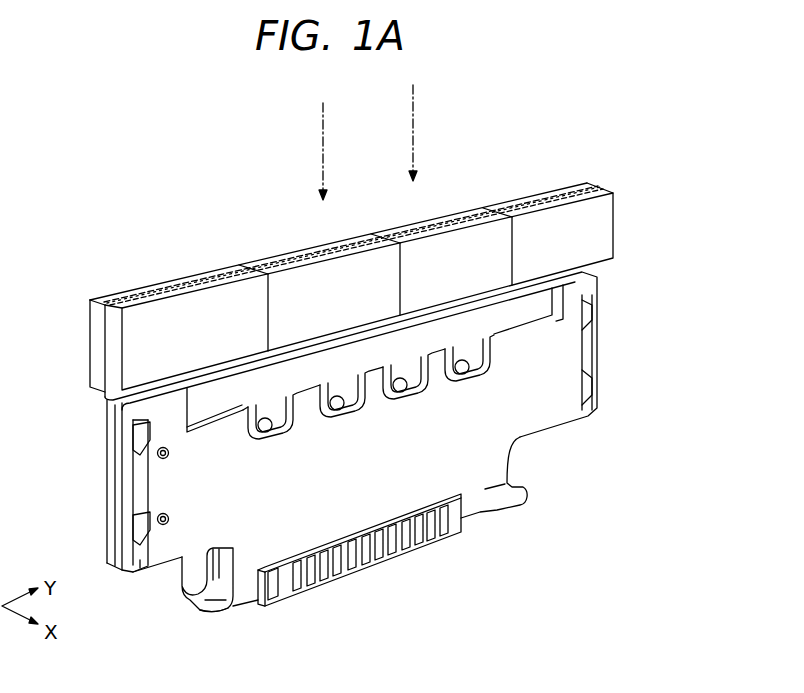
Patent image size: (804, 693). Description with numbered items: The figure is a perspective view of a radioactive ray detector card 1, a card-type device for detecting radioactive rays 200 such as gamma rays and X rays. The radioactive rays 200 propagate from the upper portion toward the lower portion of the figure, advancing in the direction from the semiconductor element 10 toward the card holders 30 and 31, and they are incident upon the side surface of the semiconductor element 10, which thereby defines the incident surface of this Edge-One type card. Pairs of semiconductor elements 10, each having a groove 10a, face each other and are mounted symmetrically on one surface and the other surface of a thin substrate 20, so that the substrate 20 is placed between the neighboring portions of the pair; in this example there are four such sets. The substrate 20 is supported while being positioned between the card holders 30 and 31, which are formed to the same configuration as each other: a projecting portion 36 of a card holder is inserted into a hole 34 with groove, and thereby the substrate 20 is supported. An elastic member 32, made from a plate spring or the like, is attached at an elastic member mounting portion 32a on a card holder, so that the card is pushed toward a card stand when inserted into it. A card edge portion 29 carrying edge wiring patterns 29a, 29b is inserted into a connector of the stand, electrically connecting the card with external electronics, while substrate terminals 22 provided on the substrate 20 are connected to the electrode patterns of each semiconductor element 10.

The radioactive ray detector card 1 is at (591, 160).
The semiconductor element 10 is at (538, 195).
The groove 10a is at (210, 284).
The substrate 20 is at (464, 213).
The radioactive rays 200 is at (412, 146).
The substrate terminal 22 is at (462, 372).
The card edge portion 29 is at (455, 523).
The edge wiring pattern 29a is at (383, 548).
The edge wiring pattern 29b is at (276, 596).
The card holder 30 is at (223, 604).
The card holder 31 is at (188, 600).
The elastic member 32 is at (593, 344).
The elastic member mounting portion 32a is at (137, 447).
The hole with groove 34 is at (168, 546).
The projecting portion 36 is at (160, 516).